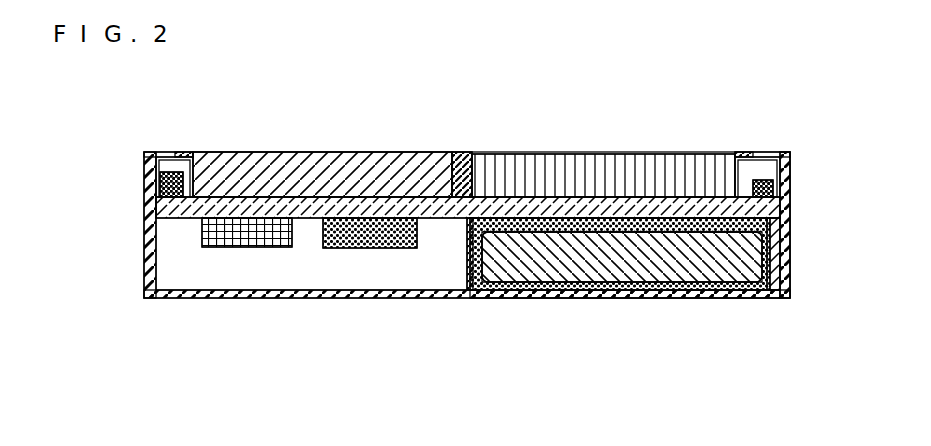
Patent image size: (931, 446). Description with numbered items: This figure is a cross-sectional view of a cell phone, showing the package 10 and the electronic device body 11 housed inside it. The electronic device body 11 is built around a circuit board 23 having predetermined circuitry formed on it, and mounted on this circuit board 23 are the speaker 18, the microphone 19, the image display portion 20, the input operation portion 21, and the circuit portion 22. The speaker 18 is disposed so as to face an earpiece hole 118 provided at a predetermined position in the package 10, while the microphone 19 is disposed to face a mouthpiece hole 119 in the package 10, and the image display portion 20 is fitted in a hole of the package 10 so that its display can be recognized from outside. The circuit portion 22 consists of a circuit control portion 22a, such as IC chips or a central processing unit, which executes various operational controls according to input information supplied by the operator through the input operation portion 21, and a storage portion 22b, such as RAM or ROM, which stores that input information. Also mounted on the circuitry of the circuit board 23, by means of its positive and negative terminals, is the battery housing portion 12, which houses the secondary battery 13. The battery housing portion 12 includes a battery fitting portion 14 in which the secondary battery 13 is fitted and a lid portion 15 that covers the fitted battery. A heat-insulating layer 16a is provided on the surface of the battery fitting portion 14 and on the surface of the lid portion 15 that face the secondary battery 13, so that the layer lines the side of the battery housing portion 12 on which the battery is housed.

The package 10 is at (195, 298).
The electronic device body 11 is at (437, 144).
The battery housing portion 12 is at (773, 236).
The secondary battery 13 is at (596, 262).
The battery fitting portion 14 is at (789, 272).
The lid portion 15 is at (695, 298).
The heat-insulating layer 16a is at (469, 288).
The speaker 18 is at (157, 163).
The microphone 19 is at (774, 181).
The image display portion 20 is at (327, 165).
The input operation portion 21 is at (571, 170).
The circuit portion 22 is at (383, 334).
The circuit control portion 22a is at (267, 236).
The storage portion 22b is at (346, 247).
The circuit board 23 is at (640, 213).
The earpiece hole 118 is at (179, 153).
The mouthpiece hole 119 is at (760, 153).